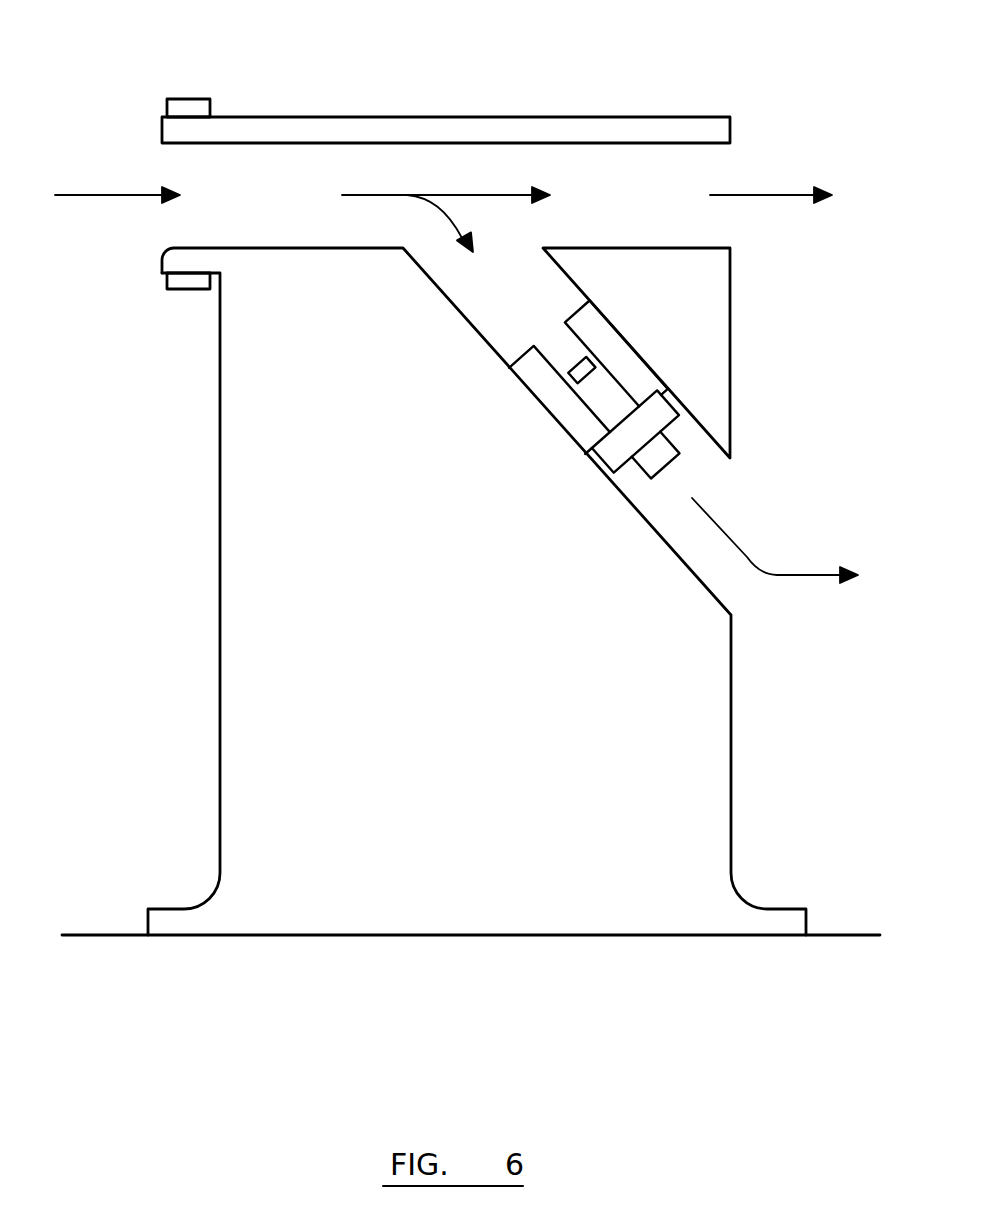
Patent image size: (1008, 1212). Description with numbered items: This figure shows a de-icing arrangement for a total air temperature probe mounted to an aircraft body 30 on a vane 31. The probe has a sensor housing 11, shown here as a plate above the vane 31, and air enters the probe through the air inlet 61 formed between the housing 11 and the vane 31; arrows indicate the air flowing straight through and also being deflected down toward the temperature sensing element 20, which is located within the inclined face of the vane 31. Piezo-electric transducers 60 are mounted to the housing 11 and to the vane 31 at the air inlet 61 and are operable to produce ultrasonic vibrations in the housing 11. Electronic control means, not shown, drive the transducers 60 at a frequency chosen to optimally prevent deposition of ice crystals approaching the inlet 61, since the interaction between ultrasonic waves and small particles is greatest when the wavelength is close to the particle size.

The sensor housing 11 is at (555, 116).
The temperature sensing element 20 is at (583, 371).
The aircraft body 30 is at (471, 935).
The vane 31 is at (273, 627).
The piezo-electric transducers 60 is at (186, 110).
The air inlet 61 is at (163, 172).